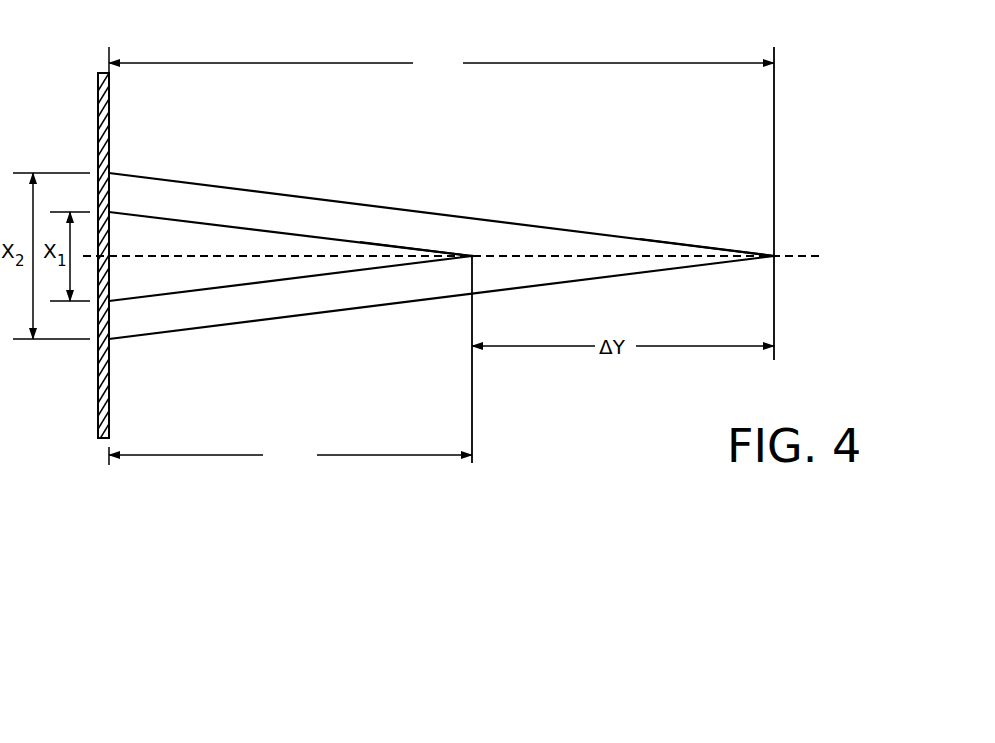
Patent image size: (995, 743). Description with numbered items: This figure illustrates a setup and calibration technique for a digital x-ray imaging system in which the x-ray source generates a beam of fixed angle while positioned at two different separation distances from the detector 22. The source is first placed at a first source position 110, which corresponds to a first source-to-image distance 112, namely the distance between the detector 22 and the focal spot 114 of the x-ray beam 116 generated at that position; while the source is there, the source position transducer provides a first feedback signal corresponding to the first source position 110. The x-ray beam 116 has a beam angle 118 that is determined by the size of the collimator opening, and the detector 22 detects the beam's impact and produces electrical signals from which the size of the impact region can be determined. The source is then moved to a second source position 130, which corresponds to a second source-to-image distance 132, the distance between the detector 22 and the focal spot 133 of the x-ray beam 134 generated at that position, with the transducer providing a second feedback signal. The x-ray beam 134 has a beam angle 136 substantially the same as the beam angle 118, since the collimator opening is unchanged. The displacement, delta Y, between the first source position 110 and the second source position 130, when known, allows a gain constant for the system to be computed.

The detector 22 is at (98, 115).
The first source position 110 is at (507, 450).
The first source-to-image distance 112 is at (267, 480).
The focal spot 114 is at (473, 256).
The x-ray beam 116 is at (314, 237).
The beam angle 118 is at (395, 265).
The second source position 130 is at (795, 121).
The second source-to-image distance 132 is at (458, 39).
The focal spot 133 is at (775, 256).
The x-ray beam 134 is at (201, 184).
The beam angle 136 is at (688, 268).